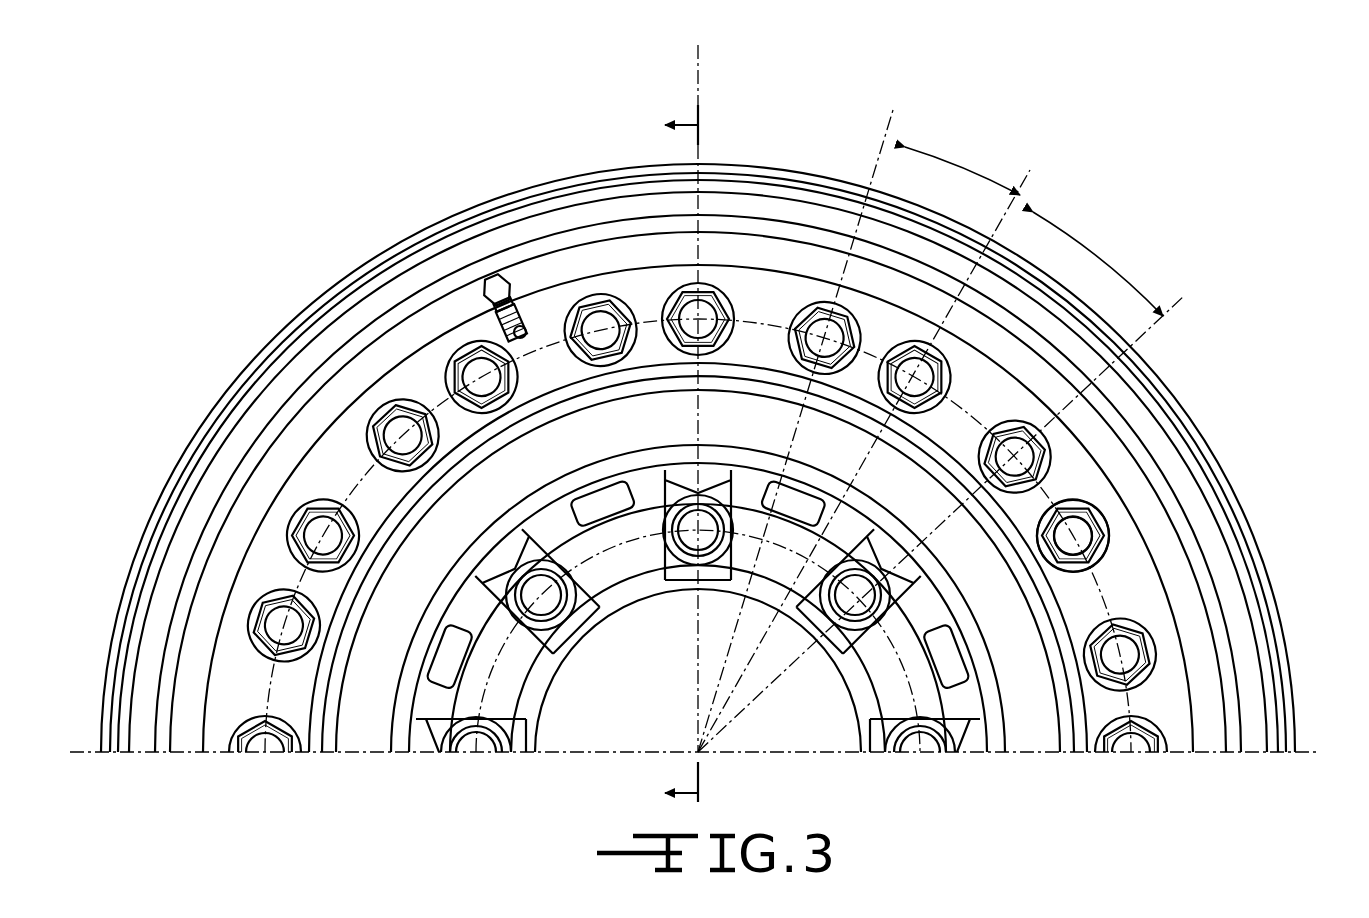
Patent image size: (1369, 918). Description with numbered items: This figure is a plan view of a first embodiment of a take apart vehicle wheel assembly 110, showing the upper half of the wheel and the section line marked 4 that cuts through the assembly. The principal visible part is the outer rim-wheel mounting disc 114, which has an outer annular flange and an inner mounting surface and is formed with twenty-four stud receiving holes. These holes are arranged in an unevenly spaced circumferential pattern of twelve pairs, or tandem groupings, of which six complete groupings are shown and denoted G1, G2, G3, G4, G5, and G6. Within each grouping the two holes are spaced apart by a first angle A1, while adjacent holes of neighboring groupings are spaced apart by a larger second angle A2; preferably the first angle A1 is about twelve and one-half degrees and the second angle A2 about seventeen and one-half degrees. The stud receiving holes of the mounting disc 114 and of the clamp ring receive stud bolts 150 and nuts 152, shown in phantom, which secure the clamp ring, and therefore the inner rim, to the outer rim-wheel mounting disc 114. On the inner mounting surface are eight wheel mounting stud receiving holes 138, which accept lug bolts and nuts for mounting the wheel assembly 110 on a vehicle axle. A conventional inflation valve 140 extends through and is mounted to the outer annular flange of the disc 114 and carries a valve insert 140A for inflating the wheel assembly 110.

The take apart vehicle wheel assembly 110 is at (740, 130).
The outer rim-wheel mounting disc 114 is at (1270, 586).
The wheel mounting stud receiving holes 138 is at (556, 604).
The inflation valve 140 is at (478, 282).
The valve insert 140A is at (517, 342).
The stud bolts 150 is at (1070, 532).
The nuts 152 is at (1106, 522).
The tandem grouping G1 is at (264, 560).
The tandem grouping G2 is at (406, 372).
The tandem grouping G3 is at (648, 292).
The tandem grouping G4 is at (882, 330).
The tandem grouping G5 is at (1075, 470).
The tandem grouping G6 is at (1172, 697).
The first angle A1 is at (864, 431).
The second angle A2 is at (941, 472).
The section line 4 is at (689, 459).